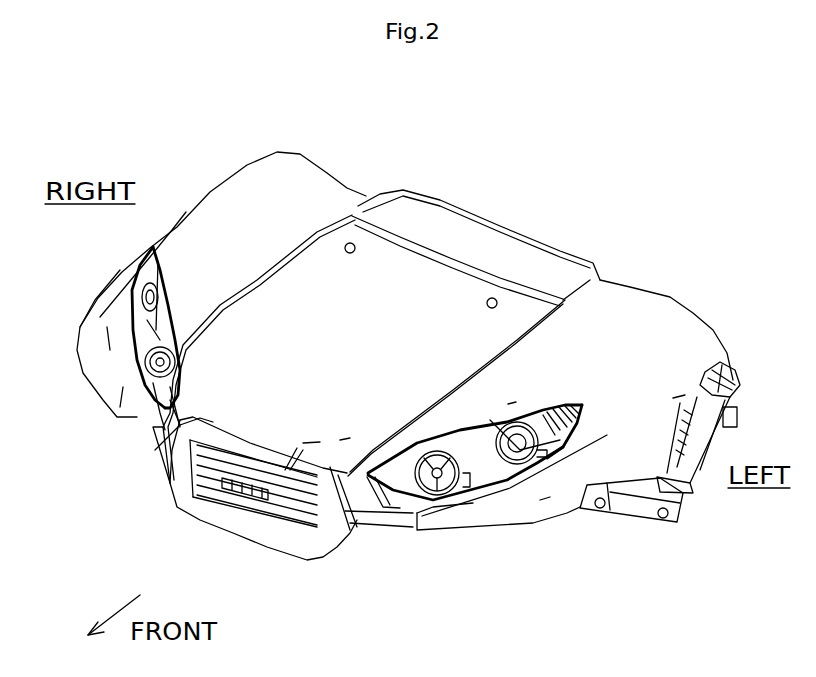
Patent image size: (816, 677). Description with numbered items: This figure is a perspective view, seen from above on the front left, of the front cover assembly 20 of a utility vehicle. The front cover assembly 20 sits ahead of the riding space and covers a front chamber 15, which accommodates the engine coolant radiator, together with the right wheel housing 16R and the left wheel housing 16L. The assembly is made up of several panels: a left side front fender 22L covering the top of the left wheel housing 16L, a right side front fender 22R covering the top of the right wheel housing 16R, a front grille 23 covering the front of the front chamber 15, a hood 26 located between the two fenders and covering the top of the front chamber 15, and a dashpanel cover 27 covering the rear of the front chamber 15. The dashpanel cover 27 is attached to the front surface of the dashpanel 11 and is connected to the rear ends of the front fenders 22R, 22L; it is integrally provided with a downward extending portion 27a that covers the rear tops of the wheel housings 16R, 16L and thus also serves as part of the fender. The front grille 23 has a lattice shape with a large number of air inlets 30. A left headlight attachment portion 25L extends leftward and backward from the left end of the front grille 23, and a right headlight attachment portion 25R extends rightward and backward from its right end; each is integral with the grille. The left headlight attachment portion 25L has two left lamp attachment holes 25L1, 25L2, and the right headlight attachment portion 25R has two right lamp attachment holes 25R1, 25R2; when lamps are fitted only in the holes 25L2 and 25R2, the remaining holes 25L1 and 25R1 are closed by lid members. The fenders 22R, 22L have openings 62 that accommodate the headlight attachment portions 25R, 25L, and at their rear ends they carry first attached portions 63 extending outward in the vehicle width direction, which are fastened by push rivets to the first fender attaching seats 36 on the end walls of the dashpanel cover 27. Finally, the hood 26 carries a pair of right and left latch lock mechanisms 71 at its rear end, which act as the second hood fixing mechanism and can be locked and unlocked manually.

The front cover assembly 20 is at (161, 109).
The dashpanel 11 is at (479, 215).
The dashpanel cover 27 is at (489, 255).
The extending portion 27a is at (633, 497).
The hood 26 is at (320, 379).
The left side front fender 22L is at (578, 383).
The right side front fender 22R is at (90, 351).
The left headlight attachment portion 25L is at (475, 489).
The left lamp attachment hole 25L1 is at (416, 436).
The left lamp attachment hole 25L2 is at (538, 412).
The right headlight attachment portion 25R is at (103, 338).
The right lamp attachment hole 25R1 is at (207, 363).
The right lamp attachment hole 25R2 is at (100, 278).
The opening 62 is at (358, 346).
The first attached portion 63 is at (711, 406).
The first fender attaching seat 36 is at (738, 395).
The latch lock mechanism 71 is at (343, 252).
The front grille 23 is at (256, 504).
The air inlets 30 is at (230, 512).
The front chamber 15 is at (380, 573).
The left wheel housing 16L is at (498, 584).
The right wheel housing 16R is at (120, 461).